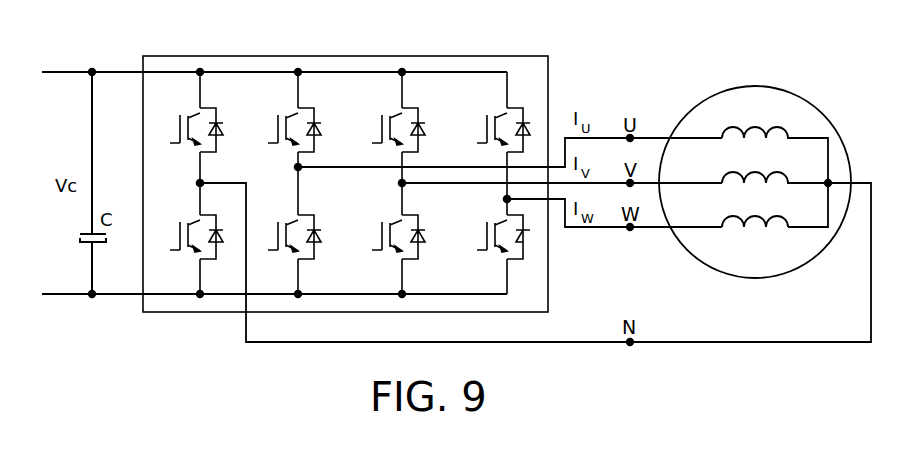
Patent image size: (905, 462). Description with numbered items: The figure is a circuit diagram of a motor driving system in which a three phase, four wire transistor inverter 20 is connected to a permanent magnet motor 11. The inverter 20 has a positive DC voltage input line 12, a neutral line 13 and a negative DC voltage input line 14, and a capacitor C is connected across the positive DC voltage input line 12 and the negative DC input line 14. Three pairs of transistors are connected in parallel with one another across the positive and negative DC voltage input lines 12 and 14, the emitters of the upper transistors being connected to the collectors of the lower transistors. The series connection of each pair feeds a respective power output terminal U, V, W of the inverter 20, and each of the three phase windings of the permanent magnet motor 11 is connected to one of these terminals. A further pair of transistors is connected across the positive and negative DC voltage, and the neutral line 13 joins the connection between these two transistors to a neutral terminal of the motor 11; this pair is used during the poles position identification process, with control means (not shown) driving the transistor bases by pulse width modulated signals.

The positive DC voltage input line 12 is at (60, 72).
The negative DC voltage input line 14 is at (60, 297).
The transistor inverter 20 is at (160, 313).
The neutral line 13 is at (590, 344).
The permanent magnet motor 11 is at (819, 108).